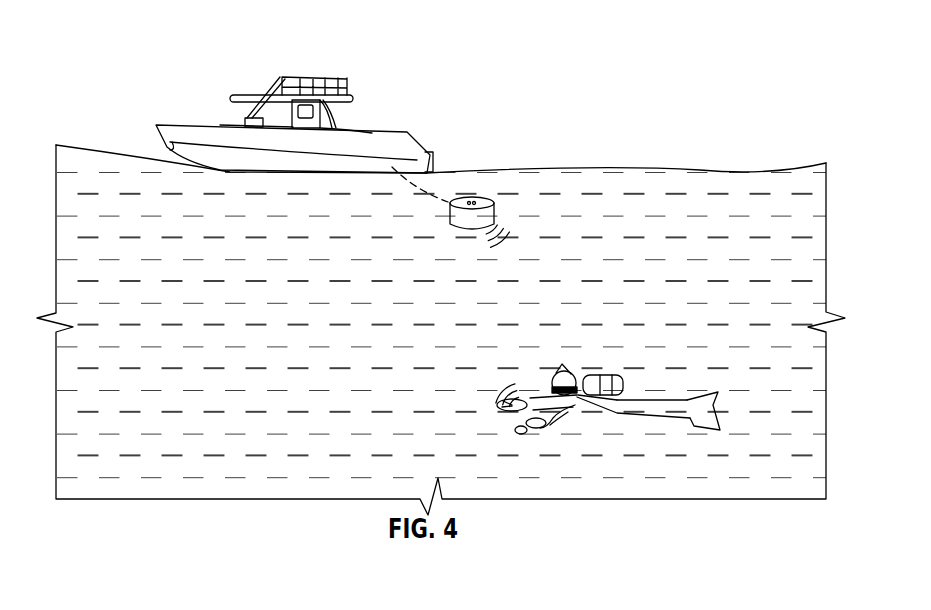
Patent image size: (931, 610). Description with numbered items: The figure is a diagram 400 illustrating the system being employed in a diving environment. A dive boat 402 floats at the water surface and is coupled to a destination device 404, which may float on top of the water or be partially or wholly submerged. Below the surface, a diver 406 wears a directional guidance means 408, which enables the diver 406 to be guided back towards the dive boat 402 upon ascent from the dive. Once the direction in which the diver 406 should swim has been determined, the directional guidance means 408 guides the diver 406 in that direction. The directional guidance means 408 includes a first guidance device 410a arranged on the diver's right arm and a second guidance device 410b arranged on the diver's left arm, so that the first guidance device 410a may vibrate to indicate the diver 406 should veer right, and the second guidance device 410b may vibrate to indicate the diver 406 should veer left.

The diagram 400 is at (657, 66).
The dive boat 402 is at (193, 123).
The destination device 404 is at (497, 215).
The diver 406 is at (663, 403).
The directional guidance means 408 is at (518, 430).
The first guidance device 410a is at (543, 424).
The second guidance device 410b is at (510, 408).